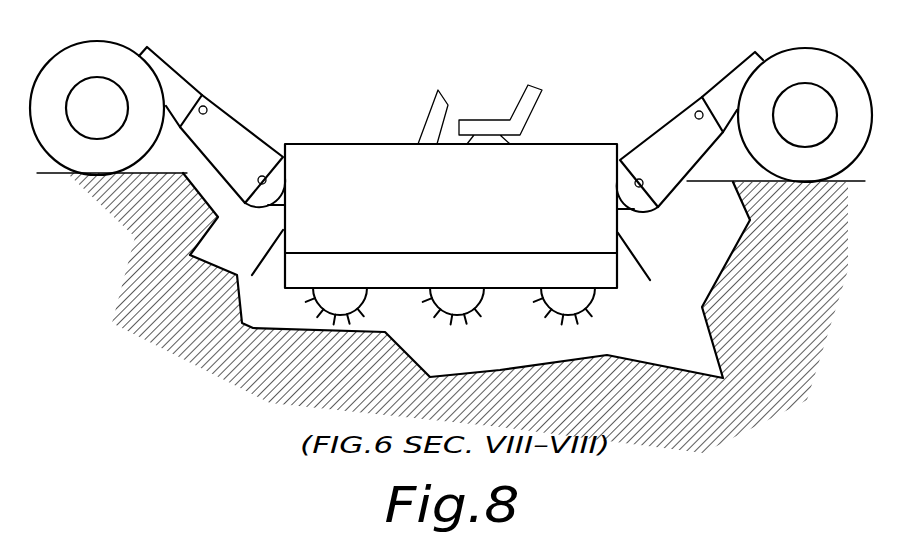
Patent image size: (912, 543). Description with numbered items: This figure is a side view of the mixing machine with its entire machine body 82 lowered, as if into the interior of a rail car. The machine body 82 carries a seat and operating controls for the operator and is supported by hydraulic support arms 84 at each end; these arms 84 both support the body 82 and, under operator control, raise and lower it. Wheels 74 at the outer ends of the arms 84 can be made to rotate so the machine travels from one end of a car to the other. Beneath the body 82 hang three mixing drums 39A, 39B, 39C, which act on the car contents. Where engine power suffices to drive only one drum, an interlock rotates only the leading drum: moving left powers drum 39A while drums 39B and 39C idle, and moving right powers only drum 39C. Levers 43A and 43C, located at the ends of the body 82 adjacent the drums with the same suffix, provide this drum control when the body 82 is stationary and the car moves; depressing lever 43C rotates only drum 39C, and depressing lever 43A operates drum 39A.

The wheels 74 is at (88, 43).
The hydraulic support arms 84 is at (233, 113).
The machine body 82 is at (451, 186).
The lever 43A is at (270, 248).
The lever 43C is at (639, 244).
The mixing drum 39A is at (370, 295).
The mixing drum 39B is at (488, 300).
The mixing drum 39C is at (575, 313).